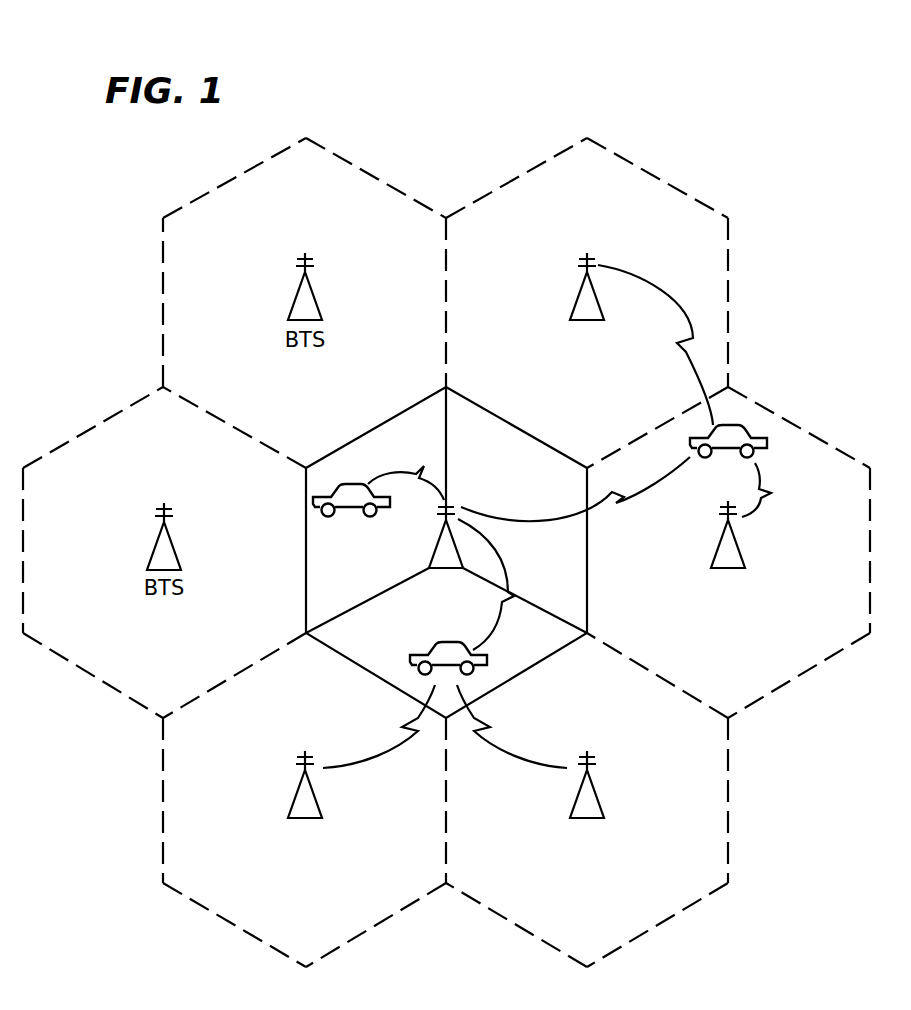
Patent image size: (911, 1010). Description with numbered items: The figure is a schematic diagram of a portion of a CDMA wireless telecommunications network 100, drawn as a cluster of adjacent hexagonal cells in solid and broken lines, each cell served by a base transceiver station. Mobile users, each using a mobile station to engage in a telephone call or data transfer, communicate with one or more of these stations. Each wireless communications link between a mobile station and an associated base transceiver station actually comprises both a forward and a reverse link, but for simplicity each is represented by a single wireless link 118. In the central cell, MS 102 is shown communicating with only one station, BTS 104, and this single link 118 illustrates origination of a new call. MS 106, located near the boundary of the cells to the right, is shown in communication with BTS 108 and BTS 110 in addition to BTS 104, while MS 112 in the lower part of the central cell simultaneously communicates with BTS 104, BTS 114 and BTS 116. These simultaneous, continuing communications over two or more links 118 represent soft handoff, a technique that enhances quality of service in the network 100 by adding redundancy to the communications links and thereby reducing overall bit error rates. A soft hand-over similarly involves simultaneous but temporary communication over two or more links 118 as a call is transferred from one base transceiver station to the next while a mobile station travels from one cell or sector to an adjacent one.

The CDMA wireless telecommunications network 100 is at (150, 382).
The MS 102 is at (351, 531).
The BTS 104 is at (446, 566).
The MS 106 is at (750, 456).
The BTS 108 is at (587, 317).
The BTS 110 is at (728, 565).
The MS 112 is at (423, 644).
The BTS 114 is at (305, 815).
The BTS 116 is at (587, 815).
The wireless link 118 is at (431, 478).